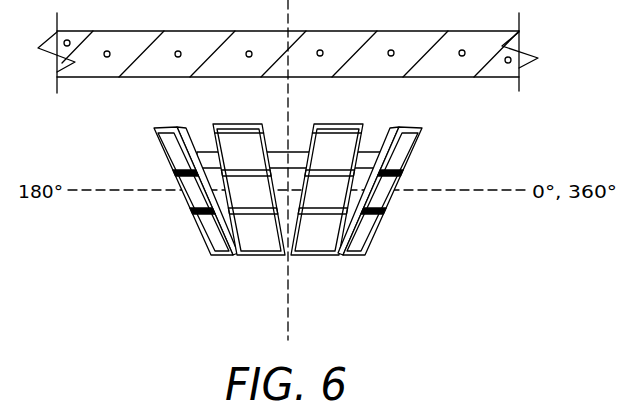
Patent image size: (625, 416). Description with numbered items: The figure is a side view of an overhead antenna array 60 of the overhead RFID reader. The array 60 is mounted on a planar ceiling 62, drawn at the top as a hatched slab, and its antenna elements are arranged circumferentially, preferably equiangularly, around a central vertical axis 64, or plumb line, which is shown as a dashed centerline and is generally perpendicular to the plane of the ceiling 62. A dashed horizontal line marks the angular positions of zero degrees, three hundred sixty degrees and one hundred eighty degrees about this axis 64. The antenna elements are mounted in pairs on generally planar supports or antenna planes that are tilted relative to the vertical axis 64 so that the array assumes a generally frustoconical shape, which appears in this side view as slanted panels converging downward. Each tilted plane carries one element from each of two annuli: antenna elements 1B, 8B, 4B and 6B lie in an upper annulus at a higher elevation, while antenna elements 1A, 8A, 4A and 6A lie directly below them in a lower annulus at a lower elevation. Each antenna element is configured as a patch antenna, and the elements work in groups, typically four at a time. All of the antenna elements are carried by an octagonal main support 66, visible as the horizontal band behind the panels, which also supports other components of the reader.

The overhead antenna array 60 is at (264, 188).
The planar ceiling 62 is at (527, 53).
The central vertical axis 64 is at (290, 302).
The octagonal main support 66 is at (277, 152).
The antenna element 1A is at (167, 194).
The antenna element 1B is at (172, 146).
The antenna element 8A is at (236, 194).
The antenna element 8B is at (236, 140).
The antenna element 4A is at (355, 175).
The antenna element 4B is at (336, 140).
The antenna element 6A is at (384, 173).
The antenna element 6B is at (406, 140).